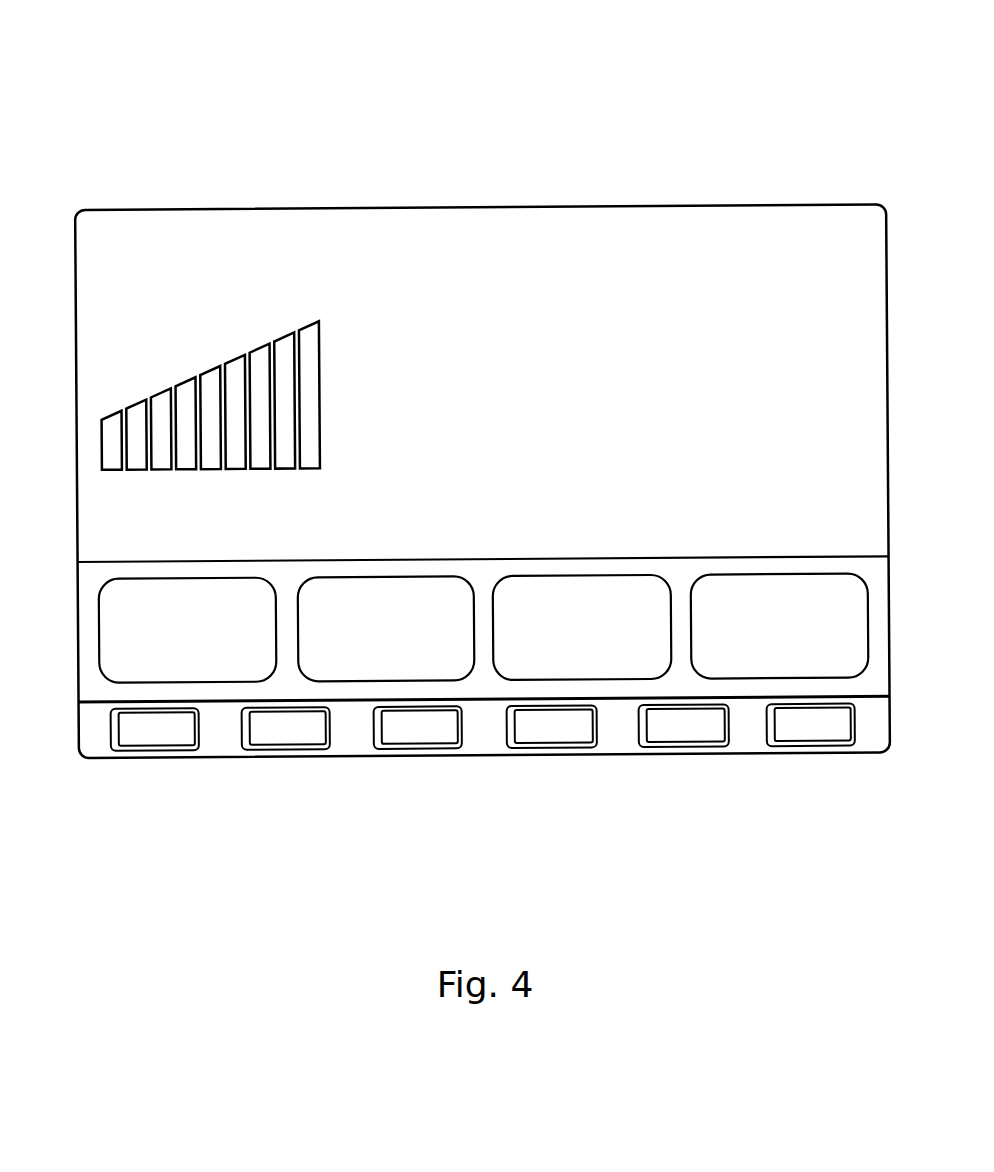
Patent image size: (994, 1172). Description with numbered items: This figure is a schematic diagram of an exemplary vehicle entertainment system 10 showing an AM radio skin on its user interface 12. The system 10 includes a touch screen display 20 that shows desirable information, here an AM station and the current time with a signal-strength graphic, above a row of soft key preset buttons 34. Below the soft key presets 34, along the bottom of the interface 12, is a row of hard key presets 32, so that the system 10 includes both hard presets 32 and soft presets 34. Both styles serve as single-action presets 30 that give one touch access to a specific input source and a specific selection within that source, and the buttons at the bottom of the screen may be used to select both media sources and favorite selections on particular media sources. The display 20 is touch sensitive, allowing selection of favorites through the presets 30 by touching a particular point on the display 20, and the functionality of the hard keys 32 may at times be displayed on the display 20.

The vehicle entertainment system 10 is at (606, 143).
The user interface 12 is at (240, 772).
The touch screen display 20 is at (418, 262).
The single-action presets 30 is at (453, 657).
The hard key presets 32 is at (283, 747).
The soft key preset buttons 34 is at (842, 600).